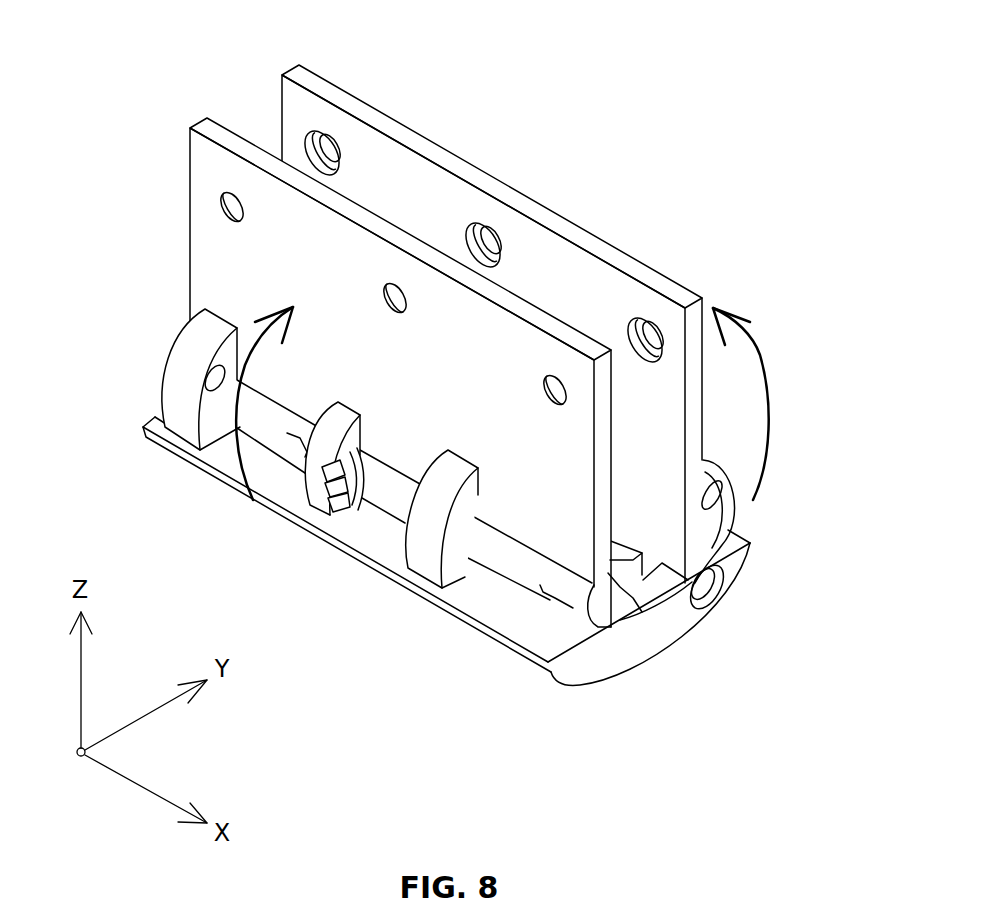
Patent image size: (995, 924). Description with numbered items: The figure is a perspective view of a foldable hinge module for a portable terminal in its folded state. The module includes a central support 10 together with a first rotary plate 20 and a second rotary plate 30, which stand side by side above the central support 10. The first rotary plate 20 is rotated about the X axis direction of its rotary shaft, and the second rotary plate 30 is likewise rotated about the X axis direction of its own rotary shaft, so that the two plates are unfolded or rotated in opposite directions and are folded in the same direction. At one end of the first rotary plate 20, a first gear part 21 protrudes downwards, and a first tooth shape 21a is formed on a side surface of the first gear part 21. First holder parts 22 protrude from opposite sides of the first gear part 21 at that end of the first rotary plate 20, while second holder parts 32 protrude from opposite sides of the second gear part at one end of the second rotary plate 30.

The central support 10 is at (630, 648).
The first rotary plate 20 is at (213, 232).
The first gear part 21 is at (312, 482).
The first tooth shape 21a is at (345, 508).
The first holder parts 22 is at (177, 378).
The second rotary plate 30 is at (386, 126).
The second holder parts 32 is at (721, 504).